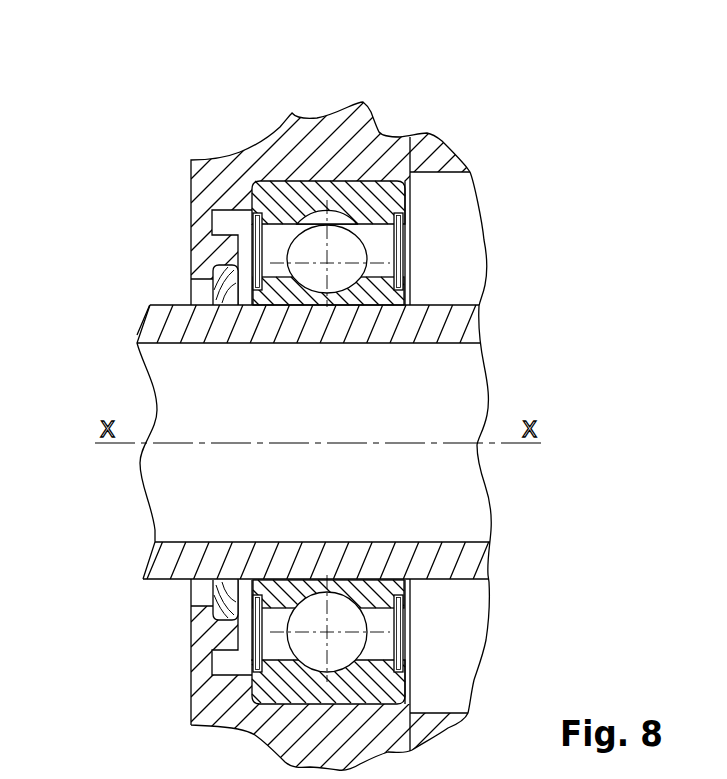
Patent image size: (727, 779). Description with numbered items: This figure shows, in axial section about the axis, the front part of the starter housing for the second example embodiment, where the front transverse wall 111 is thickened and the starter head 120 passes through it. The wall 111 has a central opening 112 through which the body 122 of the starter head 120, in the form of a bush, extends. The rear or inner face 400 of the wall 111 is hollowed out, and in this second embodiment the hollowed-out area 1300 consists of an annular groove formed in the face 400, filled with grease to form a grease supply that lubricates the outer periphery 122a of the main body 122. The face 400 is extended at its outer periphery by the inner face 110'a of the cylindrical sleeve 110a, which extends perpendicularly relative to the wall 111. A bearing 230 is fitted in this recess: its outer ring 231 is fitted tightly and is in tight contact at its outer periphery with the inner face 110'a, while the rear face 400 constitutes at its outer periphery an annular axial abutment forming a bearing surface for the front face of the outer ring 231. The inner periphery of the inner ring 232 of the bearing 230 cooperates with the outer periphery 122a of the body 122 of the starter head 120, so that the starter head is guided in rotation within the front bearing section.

The cylindrical sleeve 110a is at (293, 158).
The inner face of the cylindrical sleeve 110'a is at (458, 213).
The opening 112 is at (197, 292).
The rear face 400 is at (279, 188).
The bearing 230 is at (382, 197).
The outer ring 231 is at (388, 689).
The inner ring 232 is at (377, 592).
The starter head 120 is at (298, 428).
The body of the starter head 122 is at (356, 428).
The outer periphery of the main body 122a is at (448, 306).
The front transverse wall 111 is at (197, 636).
The hollowed-out area 1300 is at (274, 679).